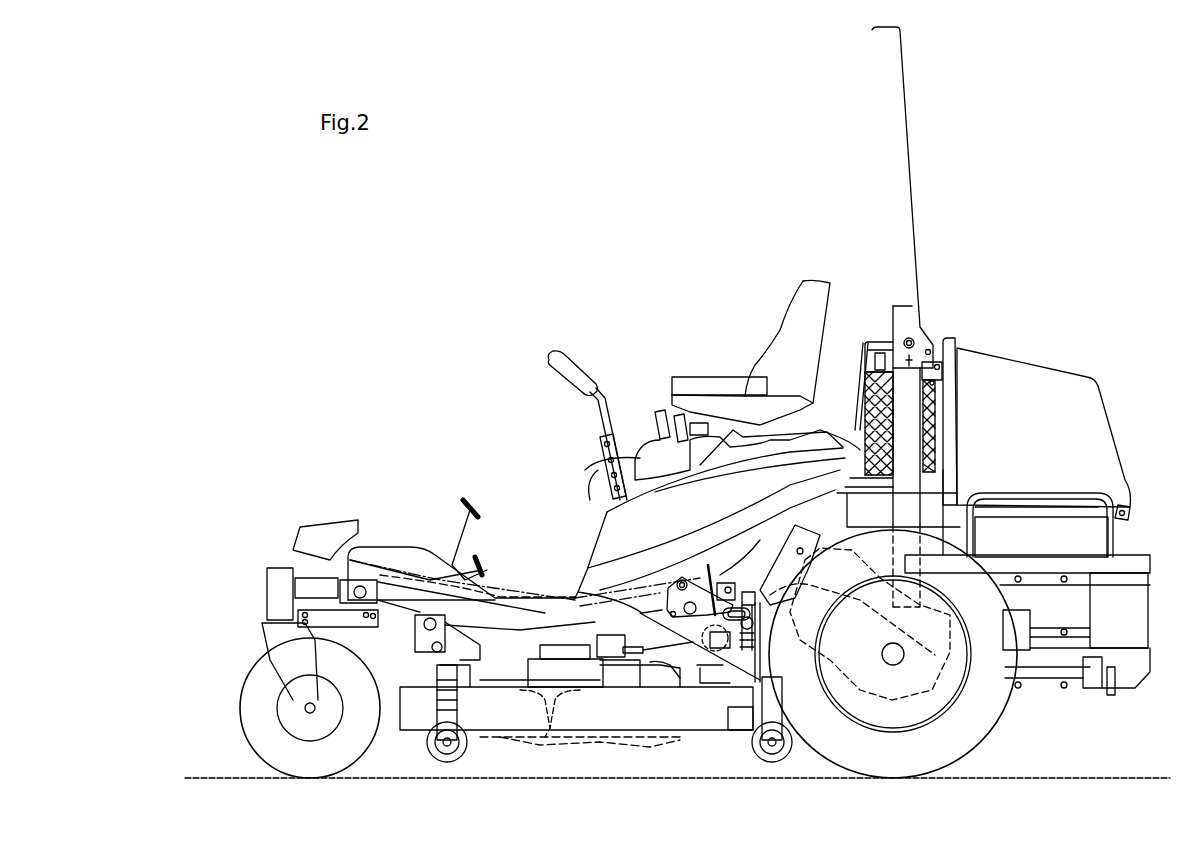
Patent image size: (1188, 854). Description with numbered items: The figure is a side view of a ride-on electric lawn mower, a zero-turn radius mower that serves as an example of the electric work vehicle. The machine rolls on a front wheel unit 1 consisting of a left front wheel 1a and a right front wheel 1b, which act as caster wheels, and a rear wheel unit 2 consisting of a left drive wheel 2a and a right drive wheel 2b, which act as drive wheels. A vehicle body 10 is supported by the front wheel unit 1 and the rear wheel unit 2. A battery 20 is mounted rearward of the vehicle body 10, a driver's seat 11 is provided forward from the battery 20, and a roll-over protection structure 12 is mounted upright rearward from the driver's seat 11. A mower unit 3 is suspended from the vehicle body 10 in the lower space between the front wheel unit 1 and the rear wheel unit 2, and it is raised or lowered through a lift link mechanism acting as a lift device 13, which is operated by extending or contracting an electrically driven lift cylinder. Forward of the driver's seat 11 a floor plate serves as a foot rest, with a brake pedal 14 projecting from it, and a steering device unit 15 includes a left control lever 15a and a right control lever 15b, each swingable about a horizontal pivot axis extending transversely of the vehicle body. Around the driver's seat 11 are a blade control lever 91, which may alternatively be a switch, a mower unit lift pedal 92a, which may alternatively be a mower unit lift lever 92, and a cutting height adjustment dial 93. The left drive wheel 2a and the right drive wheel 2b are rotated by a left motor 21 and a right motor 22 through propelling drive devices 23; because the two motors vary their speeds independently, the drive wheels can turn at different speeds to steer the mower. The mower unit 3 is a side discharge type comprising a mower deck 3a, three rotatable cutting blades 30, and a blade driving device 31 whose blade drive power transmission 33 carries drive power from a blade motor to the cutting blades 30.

The front wheel unit 1 is at (260, 700).
The left front wheel 1a is at (260, 700).
The right front wheel 1b is at (245, 720).
The rear wheel unit 2 is at (942, 654).
The left drive wheel 2a is at (942, 654).
The right drive wheel 2b is at (990, 705).
The mower unit 3 is at (665, 748).
The mower deck 3a is at (735, 745).
The vehicle body 10 is at (400, 545).
The driver's seat 11 is at (790, 335).
The roll-over protection structure 12 is at (887, 133).
The lift device 13 is at (413, 652).
The brake pedal 14 is at (470, 508).
The steering device unit 15 is at (529, 425).
The left control lever 15a is at (529, 425).
The right control lever 15b is at (560, 377).
The battery 20 is at (1095, 538).
The left motor 21 is at (781, 553).
The right motor 22 is at (788, 572).
The propelling drive device 23 is at (870, 600).
The cutting blade 30 is at (540, 745).
The blade driving device 31 is at (562, 635).
The blade drive power transmission 33 is at (675, 650).
The blade control lever 91 is at (660, 412).
The mower unit lift lever 92 is at (677, 418).
The mower unit lift pedal 92a is at (484, 562).
The cutting height adjustment dial 93 is at (700, 425).